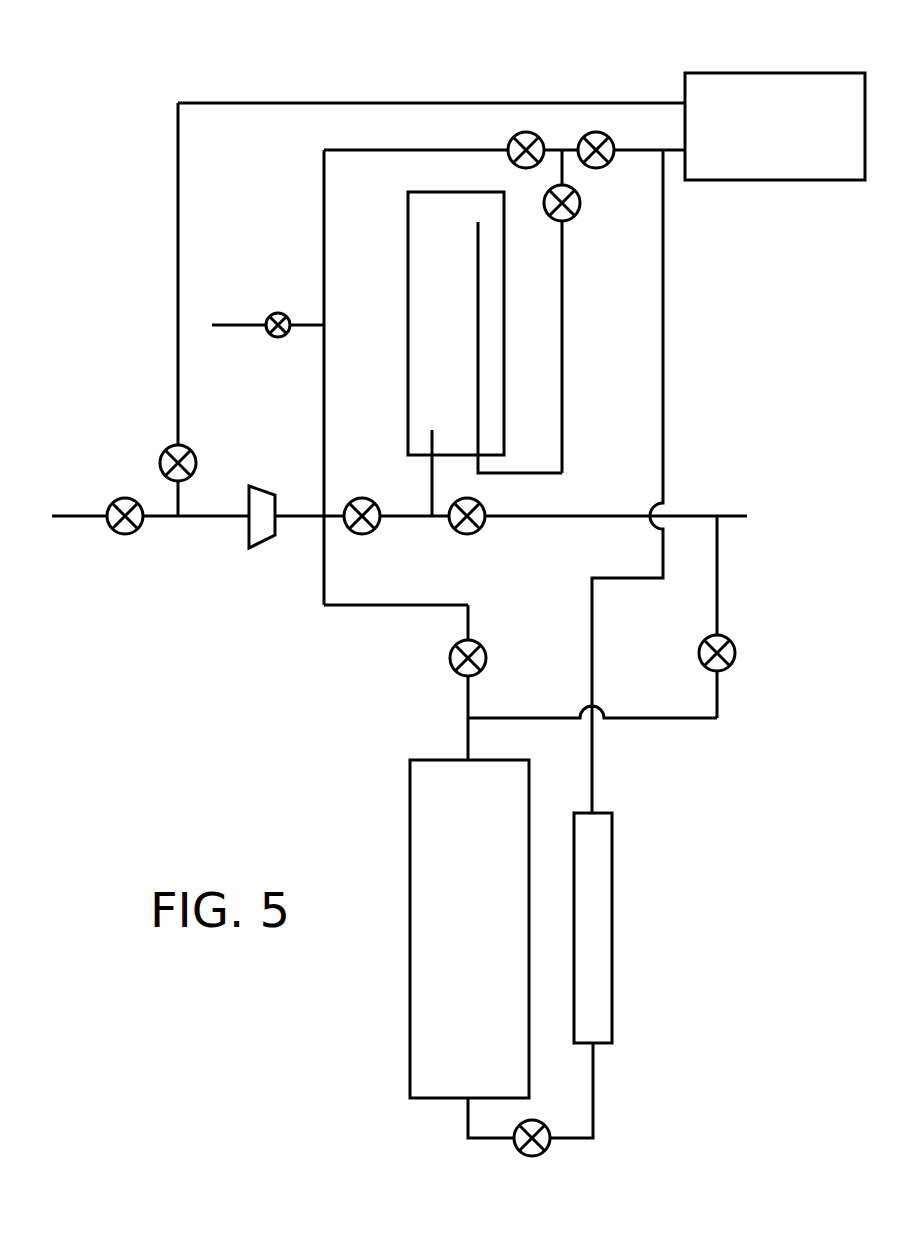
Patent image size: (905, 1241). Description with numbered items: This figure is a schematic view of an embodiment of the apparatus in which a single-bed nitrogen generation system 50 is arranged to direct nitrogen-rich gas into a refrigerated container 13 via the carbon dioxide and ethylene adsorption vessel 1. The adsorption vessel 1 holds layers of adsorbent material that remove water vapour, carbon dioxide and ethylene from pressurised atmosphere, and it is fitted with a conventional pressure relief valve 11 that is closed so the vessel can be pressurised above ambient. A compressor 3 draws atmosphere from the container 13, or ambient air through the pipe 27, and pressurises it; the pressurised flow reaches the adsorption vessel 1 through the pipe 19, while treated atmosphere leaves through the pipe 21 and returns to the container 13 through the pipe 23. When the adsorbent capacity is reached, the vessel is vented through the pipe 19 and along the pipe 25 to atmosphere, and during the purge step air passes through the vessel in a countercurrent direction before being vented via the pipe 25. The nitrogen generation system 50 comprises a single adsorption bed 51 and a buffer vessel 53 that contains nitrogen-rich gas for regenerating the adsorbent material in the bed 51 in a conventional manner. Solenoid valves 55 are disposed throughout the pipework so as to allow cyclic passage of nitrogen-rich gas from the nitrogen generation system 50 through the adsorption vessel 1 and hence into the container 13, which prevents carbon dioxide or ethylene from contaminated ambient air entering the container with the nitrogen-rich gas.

The adsorption vessel 1 is at (400, 226).
The compressor 3 is at (275, 535).
The pressure relief valve 11 is at (276, 312).
The refrigerated container 13 is at (836, 73).
The pipe 19 is at (432, 478).
The pipe 21 is at (562, 310).
The pipe 23 is at (628, 152).
The pipe 25 is at (733, 515).
The pipe 27 is at (72, 519).
The nitrogen generation system 50 is at (395, 780).
The adsorption bed 51 is at (469, 929).
The buffer vessel 53 is at (612, 872).
The solenoid valves 55 is at (530, 134).